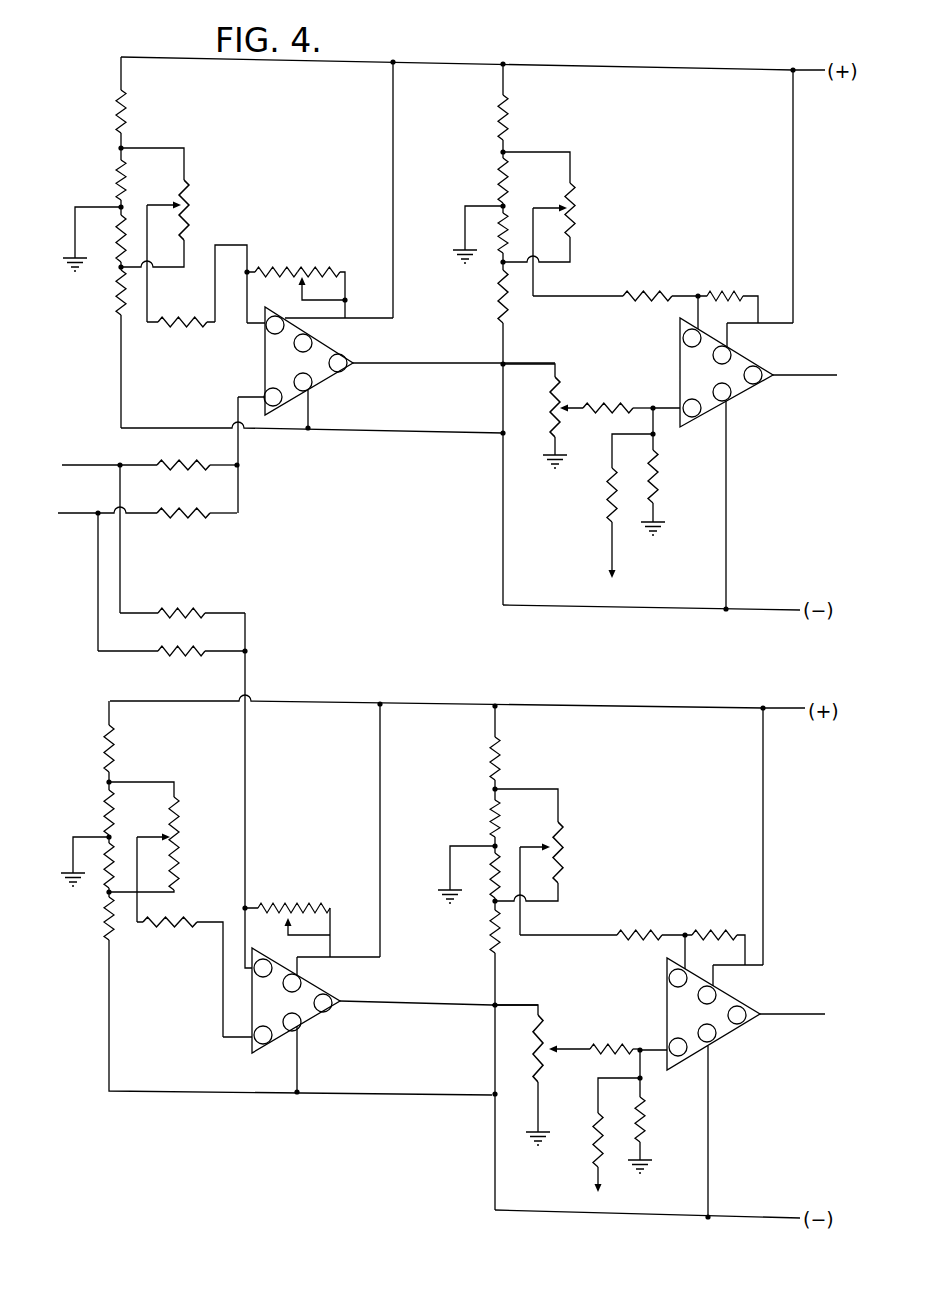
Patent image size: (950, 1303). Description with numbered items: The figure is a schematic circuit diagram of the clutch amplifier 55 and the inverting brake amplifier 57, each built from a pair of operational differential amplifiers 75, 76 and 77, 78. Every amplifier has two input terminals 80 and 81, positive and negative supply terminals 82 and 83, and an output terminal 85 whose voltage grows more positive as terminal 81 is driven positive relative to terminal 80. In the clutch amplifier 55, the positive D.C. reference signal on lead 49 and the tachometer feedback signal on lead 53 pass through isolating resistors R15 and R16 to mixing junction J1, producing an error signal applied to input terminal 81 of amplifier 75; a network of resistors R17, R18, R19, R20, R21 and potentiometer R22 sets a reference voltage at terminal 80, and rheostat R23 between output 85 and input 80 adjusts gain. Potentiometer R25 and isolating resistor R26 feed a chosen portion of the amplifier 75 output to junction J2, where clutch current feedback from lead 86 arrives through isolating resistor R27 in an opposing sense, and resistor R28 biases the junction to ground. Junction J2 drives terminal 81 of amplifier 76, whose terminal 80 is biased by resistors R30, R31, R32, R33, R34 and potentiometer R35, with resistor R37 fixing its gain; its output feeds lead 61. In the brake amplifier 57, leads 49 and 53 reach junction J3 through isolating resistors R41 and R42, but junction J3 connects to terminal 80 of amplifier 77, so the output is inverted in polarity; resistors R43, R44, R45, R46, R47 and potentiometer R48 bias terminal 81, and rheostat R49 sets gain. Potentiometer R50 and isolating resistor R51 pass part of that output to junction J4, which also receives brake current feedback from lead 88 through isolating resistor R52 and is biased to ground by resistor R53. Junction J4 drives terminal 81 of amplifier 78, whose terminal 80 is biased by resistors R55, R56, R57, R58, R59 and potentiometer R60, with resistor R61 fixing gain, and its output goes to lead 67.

The isolating resistor R15 is at (203, 462).
The isolating resistor R16 is at (176, 520).
The resistor R17 is at (118, 112).
The resistor R18 is at (118, 170).
The resistor R19 is at (118, 226).
The resistor R20 is at (117, 300).
The resistor R21 is at (183, 326).
The potentiometer R22 is at (193, 206).
The rheostat R23 is at (297, 265).
The potentiometer R25 is at (551, 428).
The isolating resistor R26 is at (602, 413).
The isolating resistor R27 is at (603, 503).
The resistor R28 is at (660, 475).
The resistor R30 is at (501, 125).
The resistor R31 is at (501, 173).
The resistor R32 is at (501, 235).
The resistor R33 is at (500, 295).
The resistor R34 is at (673, 257).
The potentiometer R35 is at (578, 217).
The resistor R37 is at (765, 270).
The isolating resistor R41 is at (186, 608).
The isolating resistor R42 is at (186, 656).
The resistor R43 is at (108, 752).
The resistor R44 is at (107, 812).
The resistor R45 is at (107, 855).
The resistor R46 is at (107, 925).
The resistor R47 is at (176, 928).
The potentiometer R48 is at (176, 852).
The rheostat R49 is at (268, 906).
The potentiometer R50 is at (533, 1040).
The isolating resistor R51 is at (596, 1027).
The isolating resistor R52 is at (594, 1138).
The resistor R53 is at (643, 1138).
The resistor R55 is at (492, 770).
The resistor R56 is at (492, 830).
The resistor R57 is at (490, 872).
The resistor R58 is at (490, 928).
The resistor R59 is at (647, 932).
The potentiometer R60 is at (562, 870).
The resistor R61 is at (755, 905).
The mixing junction J1 is at (240, 467).
The mixing junction J2 is at (650, 405).
The mixing junction J3 is at (250, 651).
The mixing junction J4 is at (638, 1046).
The lead 49 is at (92, 463).
The lead 53 is at (75, 518).
The clutch amplifier 55 is at (433, 468).
The inverting brake amplifier 57 is at (387, 688).
The lead 61 is at (813, 374).
The lead 67 is at (797, 1014).
The differential amplifier 75 is at (325, 390).
The differential amplifier 76 is at (745, 393).
The differential amplifier 77 is at (320, 1020).
The differential amplifier 78 is at (730, 1038).
The input terminal 80 is at (268, 335).
The input terminal 81 is at (268, 395).
The positive supply terminal 82 is at (532, 646).
The negative supply terminal 83 is at (302, 382).
The output terminal 85 is at (355, 360).
The lead 86 is at (607, 540).
The lead 88 is at (595, 1172).